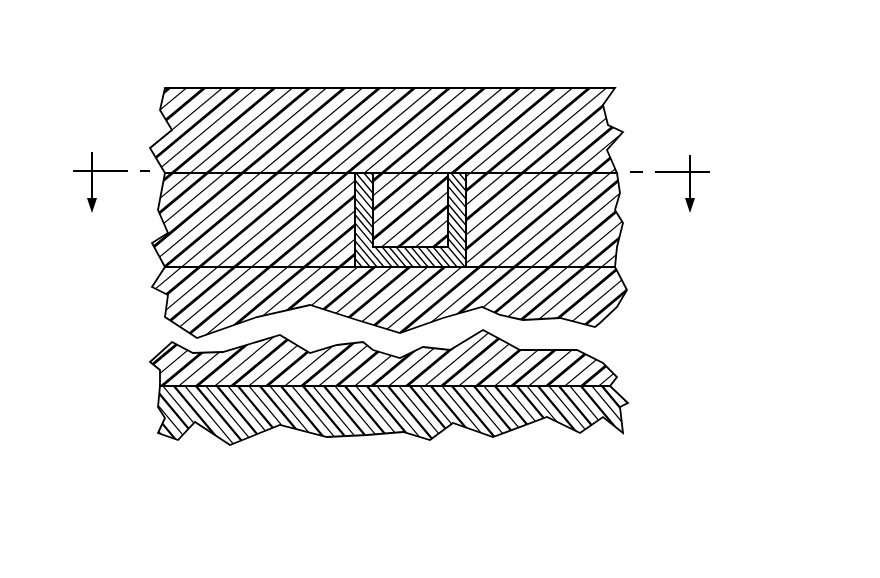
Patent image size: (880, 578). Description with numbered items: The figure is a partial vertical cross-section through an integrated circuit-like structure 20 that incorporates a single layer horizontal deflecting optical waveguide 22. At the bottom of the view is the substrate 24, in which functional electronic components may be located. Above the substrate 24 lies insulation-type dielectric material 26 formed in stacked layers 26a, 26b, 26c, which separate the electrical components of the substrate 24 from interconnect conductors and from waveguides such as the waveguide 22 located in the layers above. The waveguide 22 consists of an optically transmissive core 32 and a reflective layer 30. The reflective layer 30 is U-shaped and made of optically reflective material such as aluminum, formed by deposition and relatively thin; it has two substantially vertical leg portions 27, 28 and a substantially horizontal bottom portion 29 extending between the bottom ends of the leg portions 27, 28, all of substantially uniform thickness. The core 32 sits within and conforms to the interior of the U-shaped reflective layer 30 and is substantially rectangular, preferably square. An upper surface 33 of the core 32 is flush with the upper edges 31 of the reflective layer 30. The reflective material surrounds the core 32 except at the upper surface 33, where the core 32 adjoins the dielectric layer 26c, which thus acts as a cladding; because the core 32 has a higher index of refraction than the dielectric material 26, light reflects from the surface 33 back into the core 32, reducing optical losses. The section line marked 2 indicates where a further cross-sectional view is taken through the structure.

The integrated circuit-like structure 20 is at (603, 40).
The single layer horizontal deflecting optical waveguide 22 is at (445, 160).
The substrate 24 is at (165, 402).
The insulation-type dielectric material 26 is at (148, 94).
The dielectric material layer 26a is at (590, 248).
The dielectric material layer 26b is at (610, 302).
The dielectric material layer 26c is at (595, 107).
The leg portion 27 is at (360, 195).
The leg portion 28 is at (460, 215).
The bottom portion 29 is at (420, 252).
The reflective layer 30 is at (343, 180).
The upper edges 31 is at (360, 172).
The core 32 is at (407, 185).
The upper surface 33 is at (428, 176).
The section line 2- 2 is at (394, 182).